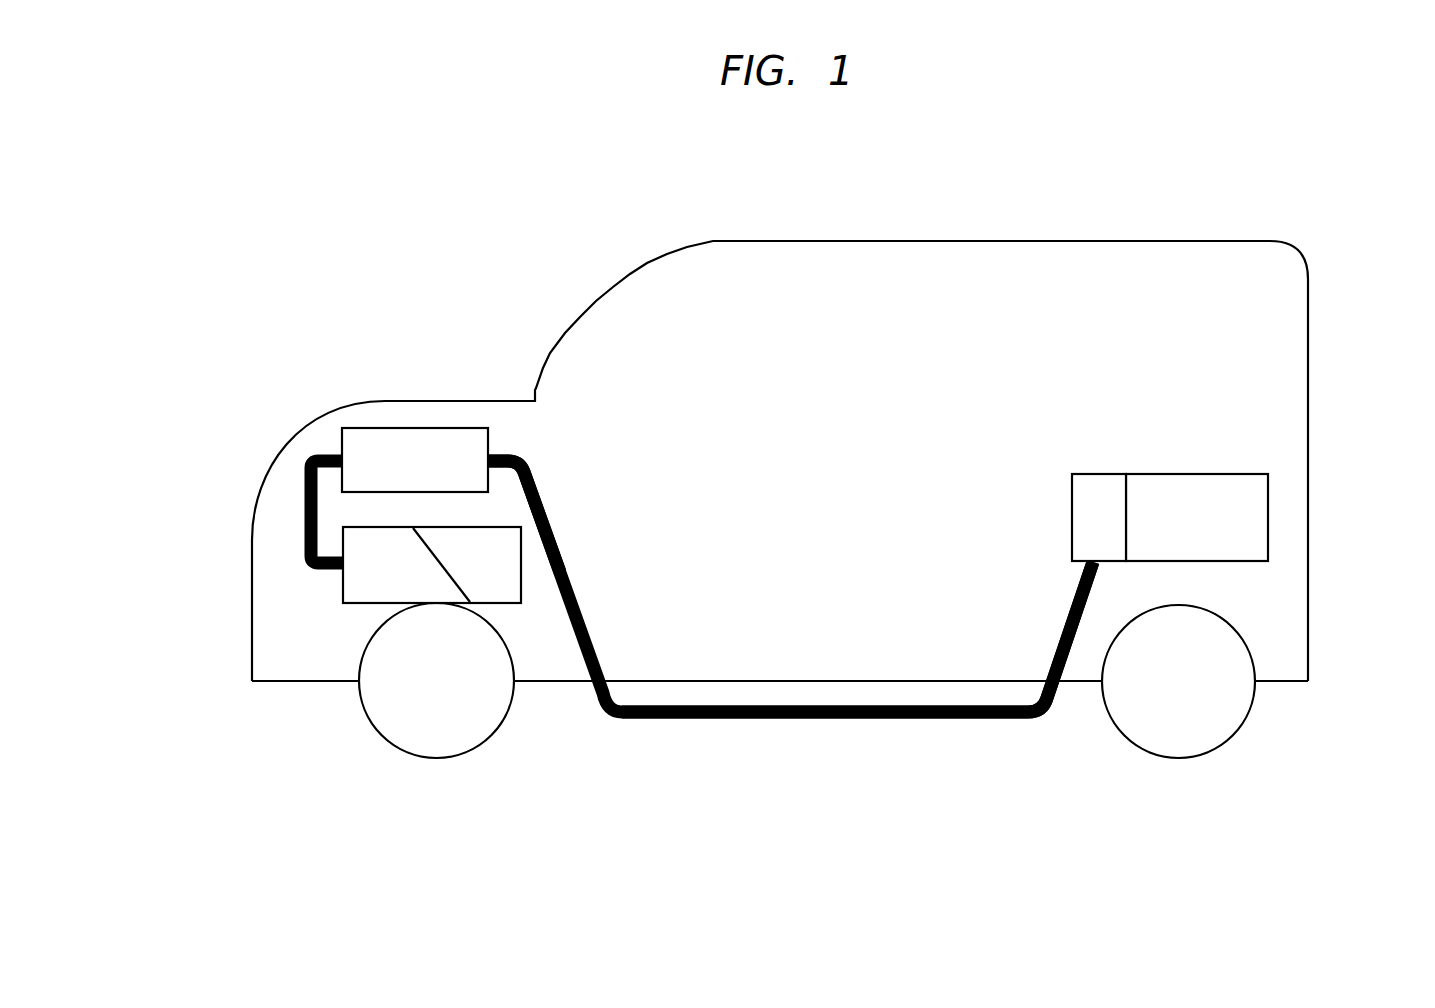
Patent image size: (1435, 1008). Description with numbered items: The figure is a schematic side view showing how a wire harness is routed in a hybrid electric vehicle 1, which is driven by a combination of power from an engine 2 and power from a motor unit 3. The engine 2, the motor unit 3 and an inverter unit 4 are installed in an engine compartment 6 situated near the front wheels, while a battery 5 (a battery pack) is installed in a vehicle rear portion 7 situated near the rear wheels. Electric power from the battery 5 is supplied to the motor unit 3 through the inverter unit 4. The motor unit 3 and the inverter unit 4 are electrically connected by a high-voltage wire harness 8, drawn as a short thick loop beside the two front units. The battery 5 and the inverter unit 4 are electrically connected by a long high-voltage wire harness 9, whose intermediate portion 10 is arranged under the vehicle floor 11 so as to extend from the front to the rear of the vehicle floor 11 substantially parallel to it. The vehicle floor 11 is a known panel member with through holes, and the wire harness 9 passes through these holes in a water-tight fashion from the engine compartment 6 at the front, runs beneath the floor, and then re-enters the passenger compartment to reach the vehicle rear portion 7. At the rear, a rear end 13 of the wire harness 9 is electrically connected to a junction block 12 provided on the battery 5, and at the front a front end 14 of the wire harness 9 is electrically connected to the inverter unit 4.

The hybrid electric vehicle 1 is at (438, 279).
The engine 2 is at (497, 580).
The motor unit 3 is at (357, 580).
The inverter unit 4 is at (378, 448).
The battery 5 is at (1208, 473).
The engine compartment 6 is at (279, 639).
The vehicle rear portion 7 is at (1275, 598).
The high-voltage wire harness 8 is at (306, 497).
The high-voltage wire harness 9 is at (702, 716).
The intermediate portion 10 is at (853, 718).
The vehicle floor 11 is at (975, 682).
The junction block 12 is at (1090, 473).
The rear end 13 is at (1082, 590).
The front end 14 is at (530, 460).